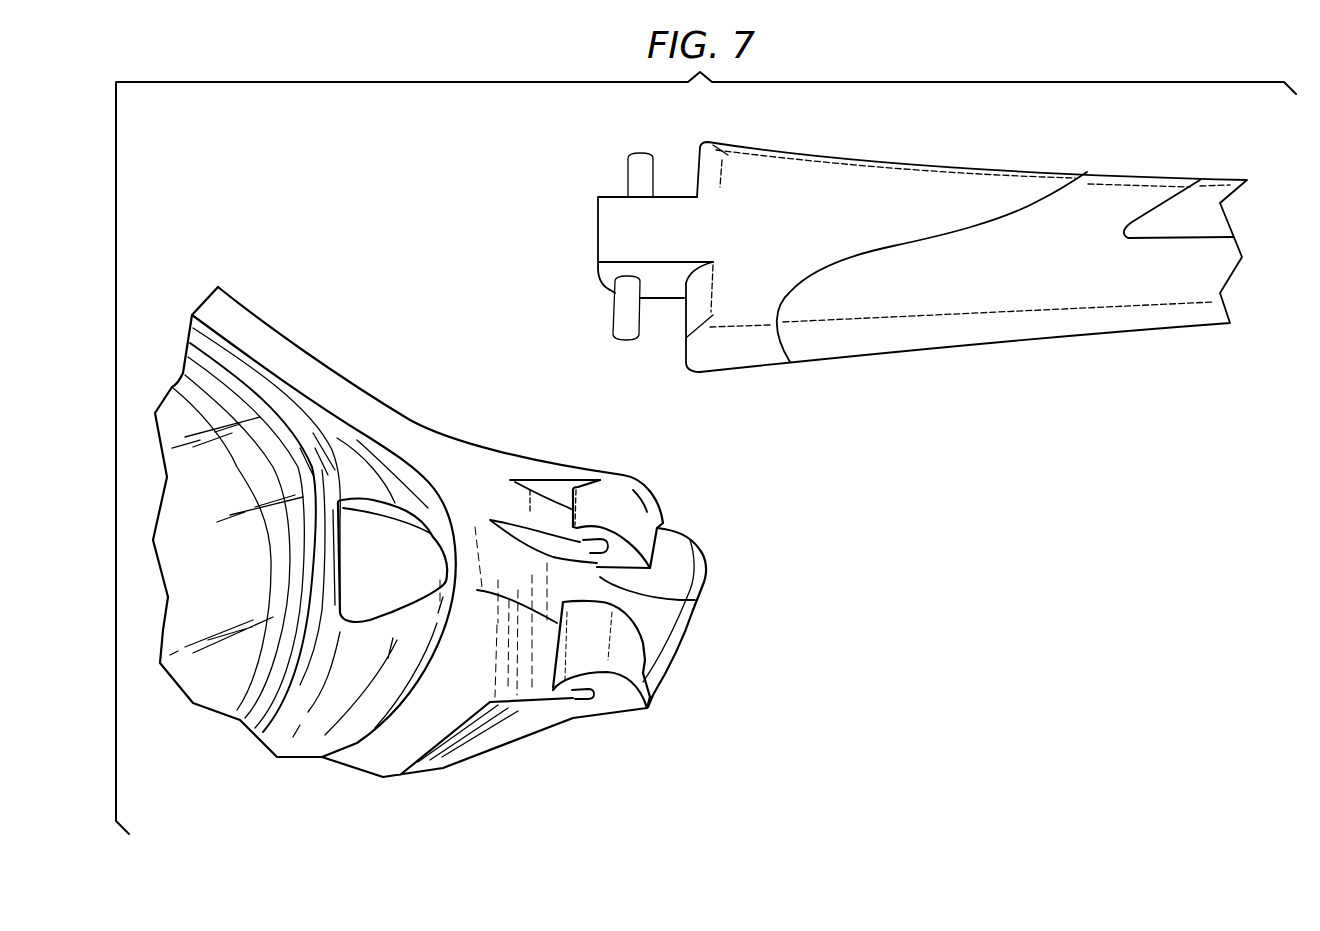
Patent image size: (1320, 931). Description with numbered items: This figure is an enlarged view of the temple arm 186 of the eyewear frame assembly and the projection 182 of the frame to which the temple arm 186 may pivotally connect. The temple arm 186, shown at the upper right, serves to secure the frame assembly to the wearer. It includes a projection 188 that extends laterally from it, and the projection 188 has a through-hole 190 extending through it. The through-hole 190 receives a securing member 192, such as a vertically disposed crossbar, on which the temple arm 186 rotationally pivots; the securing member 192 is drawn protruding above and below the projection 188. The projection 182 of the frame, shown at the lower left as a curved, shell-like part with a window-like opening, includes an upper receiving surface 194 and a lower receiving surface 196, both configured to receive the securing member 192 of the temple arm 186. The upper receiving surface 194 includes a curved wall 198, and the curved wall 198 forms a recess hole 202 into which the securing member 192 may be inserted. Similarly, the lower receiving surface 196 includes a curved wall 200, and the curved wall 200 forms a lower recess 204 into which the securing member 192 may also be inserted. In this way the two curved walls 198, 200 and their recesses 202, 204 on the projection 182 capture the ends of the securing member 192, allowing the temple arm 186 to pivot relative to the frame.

The projection 182 is at (703, 582).
The second temple arm 186 is at (896, 203).
The projection 188 is at (617, 231).
The through-hole 190 is at (622, 292).
The securing member 192 is at (637, 175).
The upper receiving surface 194 is at (520, 500).
The lower receiving surface 196 is at (505, 663).
The curved wall 198 is at (595, 507).
The curved wall 200 is at (600, 638).
The recess hole 202 is at (655, 583).
The lower recess 204 is at (583, 697).